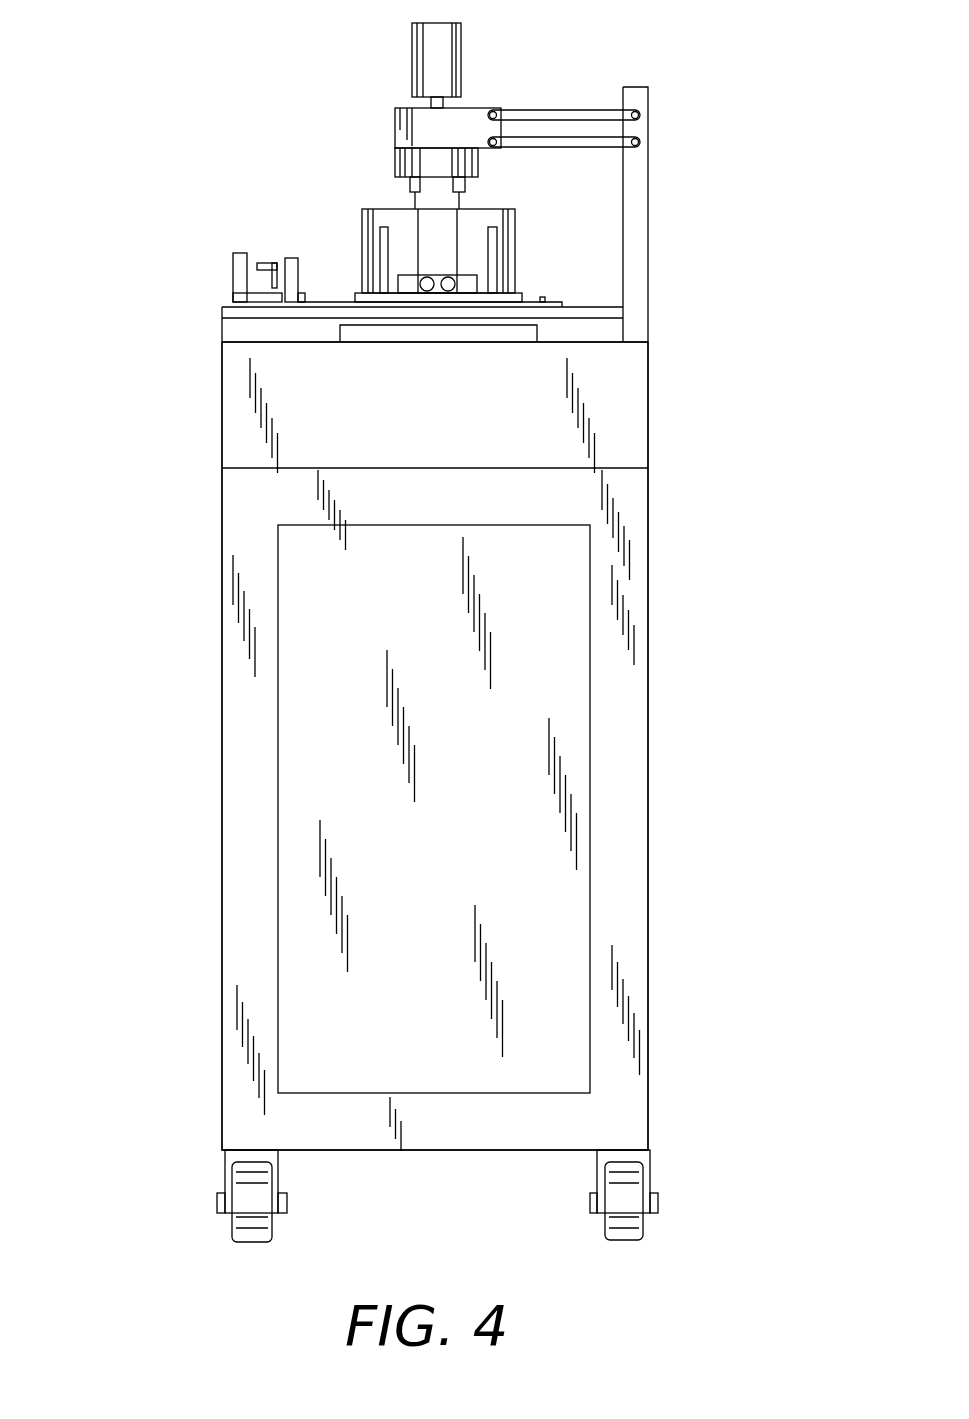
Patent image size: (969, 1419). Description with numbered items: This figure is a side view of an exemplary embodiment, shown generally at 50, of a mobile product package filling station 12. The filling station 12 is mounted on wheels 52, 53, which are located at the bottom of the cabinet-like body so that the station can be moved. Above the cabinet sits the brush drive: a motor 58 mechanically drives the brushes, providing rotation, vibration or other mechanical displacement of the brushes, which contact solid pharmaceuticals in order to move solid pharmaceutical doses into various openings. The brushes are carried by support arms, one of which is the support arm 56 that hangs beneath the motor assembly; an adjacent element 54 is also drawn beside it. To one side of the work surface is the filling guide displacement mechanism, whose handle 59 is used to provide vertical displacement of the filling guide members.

The exemplary embodiment 50 is at (815, 843).
The mobile product package filling station 12 is at (572, 648).
The motor 58 is at (450, 157).
The support arm 56 is at (407, 192).
The right dispensing nozzle 54 is at (450, 184).
The handle 59 is at (277, 283).
The wheel 52 is at (232, 1236).
The wheel 53 is at (645, 1236).